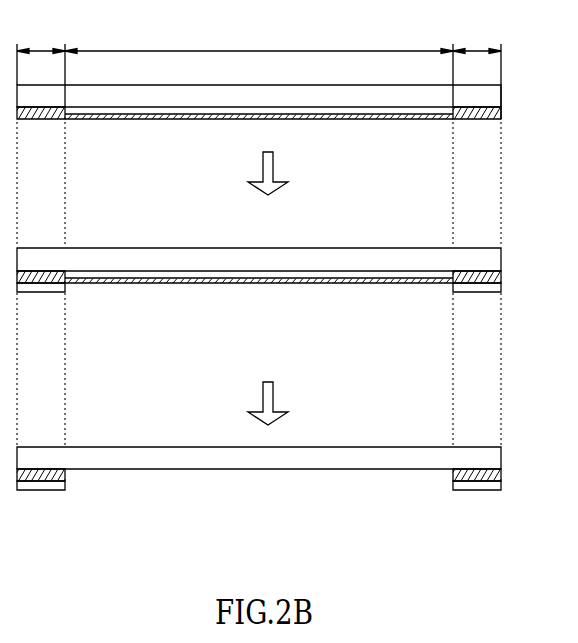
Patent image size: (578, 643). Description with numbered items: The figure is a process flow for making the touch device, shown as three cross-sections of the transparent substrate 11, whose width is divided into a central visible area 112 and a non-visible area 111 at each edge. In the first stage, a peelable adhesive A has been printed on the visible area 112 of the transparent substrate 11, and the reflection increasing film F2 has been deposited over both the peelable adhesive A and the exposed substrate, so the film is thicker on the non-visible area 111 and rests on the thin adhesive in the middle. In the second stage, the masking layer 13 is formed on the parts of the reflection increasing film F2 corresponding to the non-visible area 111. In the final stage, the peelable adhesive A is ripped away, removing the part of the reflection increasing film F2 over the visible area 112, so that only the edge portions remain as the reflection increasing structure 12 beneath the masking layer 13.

The transparent substrate 11 is at (495, 98).
The non-visible area 111 is at (259, 74).
The visible area 112 is at (259, 41).
The reflection increasing film F2 is at (286, 209).
The peelable adhesive A is at (407, 110).
The reflection increasing structure 12 is at (498, 475).
The masking layer 13 is at (493, 292).